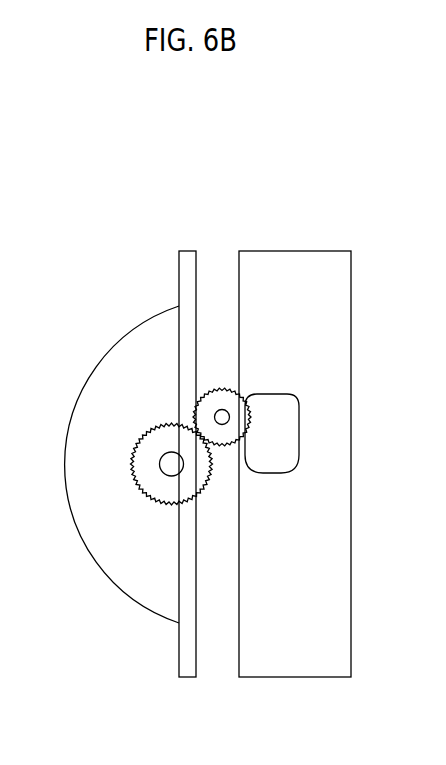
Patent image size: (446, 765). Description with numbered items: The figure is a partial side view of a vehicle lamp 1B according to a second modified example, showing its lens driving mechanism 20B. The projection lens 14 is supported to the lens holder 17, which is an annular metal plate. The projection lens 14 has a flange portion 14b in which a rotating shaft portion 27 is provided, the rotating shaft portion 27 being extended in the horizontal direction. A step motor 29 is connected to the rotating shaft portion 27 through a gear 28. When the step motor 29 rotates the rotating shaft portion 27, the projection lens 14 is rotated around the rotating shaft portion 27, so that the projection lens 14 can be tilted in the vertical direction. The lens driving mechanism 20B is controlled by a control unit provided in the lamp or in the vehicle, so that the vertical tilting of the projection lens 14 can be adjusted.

The vehicle lamp 1B is at (329, 222).
The projection lens 14 is at (134, 328).
The flange portion 14b is at (185, 250).
The lens holder 17 is at (349, 312).
The lens driving mechanism 20B is at (140, 677).
The rotating shaft portion 27 is at (166, 466).
The gear 28 is at (233, 386).
The step motor 29 is at (282, 422).